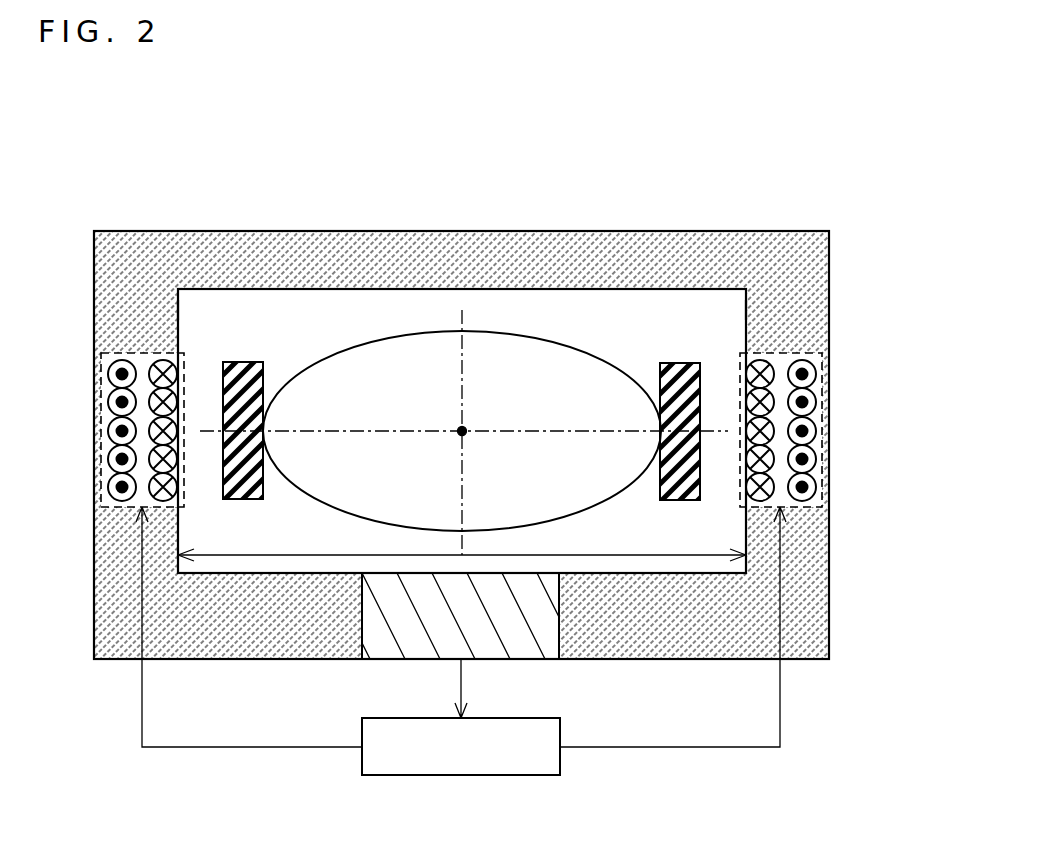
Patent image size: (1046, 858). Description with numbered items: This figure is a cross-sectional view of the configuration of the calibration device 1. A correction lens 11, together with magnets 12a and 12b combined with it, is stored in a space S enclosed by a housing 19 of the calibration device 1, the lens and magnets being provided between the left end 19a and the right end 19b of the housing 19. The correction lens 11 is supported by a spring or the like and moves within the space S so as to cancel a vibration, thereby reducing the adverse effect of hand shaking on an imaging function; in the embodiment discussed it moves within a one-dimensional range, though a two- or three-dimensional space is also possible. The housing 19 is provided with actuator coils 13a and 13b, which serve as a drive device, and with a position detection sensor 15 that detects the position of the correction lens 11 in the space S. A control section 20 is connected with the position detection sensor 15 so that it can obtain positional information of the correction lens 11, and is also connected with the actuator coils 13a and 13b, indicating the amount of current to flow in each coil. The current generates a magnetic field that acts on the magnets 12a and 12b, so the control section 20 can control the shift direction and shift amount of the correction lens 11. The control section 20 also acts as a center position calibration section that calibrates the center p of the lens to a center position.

The calibration device 1 is at (841, 157).
The correction lens 11 is at (584, 349).
The magnet 12a is at (252, 362).
The magnet 12b is at (679, 363).
The actuator coil 13a is at (143, 353).
The actuator coil 13b is at (780, 353).
The position detection sensor 15 is at (523, 660).
The housing 19 is at (462, 232).
The left end 19a is at (180, 320).
The right end 19b is at (745, 320).
The control section 20 is at (561, 733).
The space S is at (629, 555).
The center p is at (464, 429).